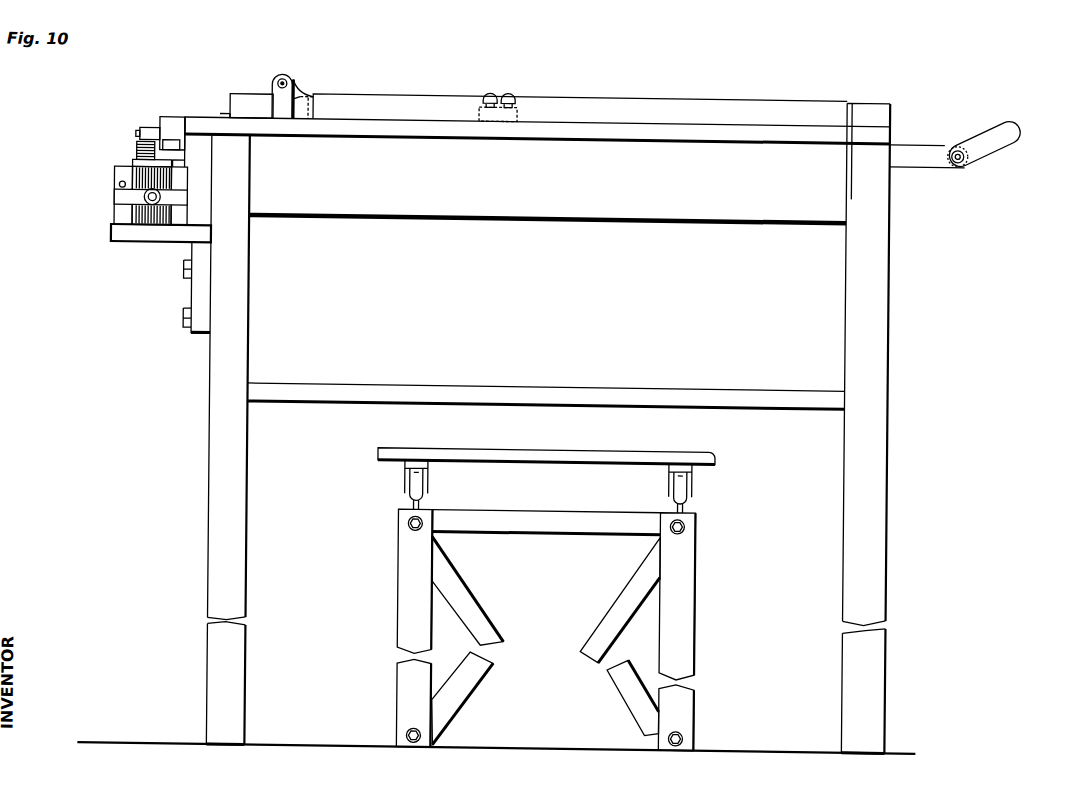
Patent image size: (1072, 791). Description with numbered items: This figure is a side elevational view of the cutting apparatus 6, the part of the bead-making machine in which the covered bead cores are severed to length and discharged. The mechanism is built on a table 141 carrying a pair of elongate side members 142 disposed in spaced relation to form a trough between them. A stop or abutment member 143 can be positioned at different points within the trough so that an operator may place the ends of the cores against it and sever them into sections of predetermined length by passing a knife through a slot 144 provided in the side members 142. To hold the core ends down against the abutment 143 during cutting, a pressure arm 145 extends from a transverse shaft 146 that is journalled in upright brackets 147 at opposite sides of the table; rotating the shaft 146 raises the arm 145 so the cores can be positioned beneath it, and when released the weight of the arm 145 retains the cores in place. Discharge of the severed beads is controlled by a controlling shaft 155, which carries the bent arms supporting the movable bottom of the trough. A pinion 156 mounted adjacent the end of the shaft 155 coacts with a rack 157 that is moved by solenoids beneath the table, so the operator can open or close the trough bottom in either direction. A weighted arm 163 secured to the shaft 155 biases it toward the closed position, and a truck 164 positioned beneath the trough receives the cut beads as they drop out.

The cutting apparatus 6 is at (606, 197).
The table 141 is at (607, 126).
The elongate side members 142 is at (772, 99).
The stop or abutment member 143 is at (313, 92).
The slot 144 is at (853, 94).
The pressure arm 145 is at (302, 87).
The transverse shaft 146 is at (286, 76).
The upright brackets 147 is at (275, 89).
The controlling shaft 155 is at (140, 128).
The pinion 156 is at (158, 126).
The rack 157 is at (182, 164).
The weighted arm 163 is at (138, 144).
The truck 164 is at (591, 452).